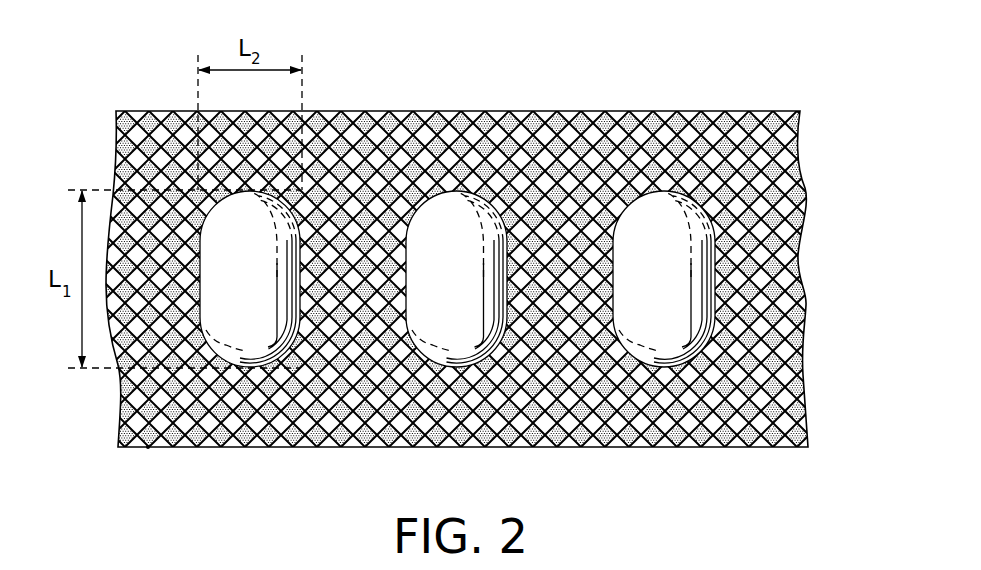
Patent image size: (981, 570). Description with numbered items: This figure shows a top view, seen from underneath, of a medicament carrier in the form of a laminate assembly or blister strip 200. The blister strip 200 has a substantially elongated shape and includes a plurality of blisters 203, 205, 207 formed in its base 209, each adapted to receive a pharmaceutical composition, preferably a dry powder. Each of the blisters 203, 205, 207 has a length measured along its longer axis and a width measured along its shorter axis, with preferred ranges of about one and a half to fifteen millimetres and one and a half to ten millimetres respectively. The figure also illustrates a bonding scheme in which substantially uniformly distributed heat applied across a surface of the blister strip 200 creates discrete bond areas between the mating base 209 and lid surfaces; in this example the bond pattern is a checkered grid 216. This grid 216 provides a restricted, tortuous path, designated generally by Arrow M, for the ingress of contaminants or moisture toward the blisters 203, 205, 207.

The blister strip 200 is at (770, 111).
The checkered grid 216 is at (118, 151).
The base 209 is at (793, 400).
The blister 207 is at (259, 352).
The blister 205 is at (466, 352).
The blister 203 is at (673, 352).
The Arrow M is at (148, 447).